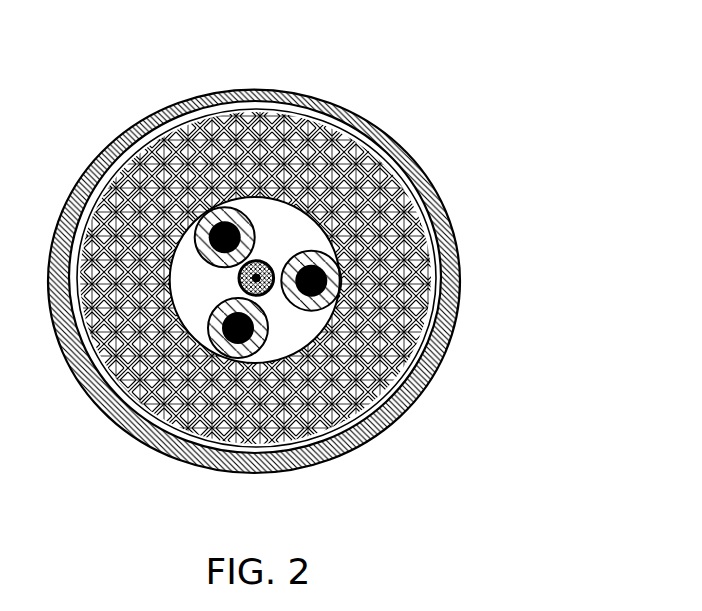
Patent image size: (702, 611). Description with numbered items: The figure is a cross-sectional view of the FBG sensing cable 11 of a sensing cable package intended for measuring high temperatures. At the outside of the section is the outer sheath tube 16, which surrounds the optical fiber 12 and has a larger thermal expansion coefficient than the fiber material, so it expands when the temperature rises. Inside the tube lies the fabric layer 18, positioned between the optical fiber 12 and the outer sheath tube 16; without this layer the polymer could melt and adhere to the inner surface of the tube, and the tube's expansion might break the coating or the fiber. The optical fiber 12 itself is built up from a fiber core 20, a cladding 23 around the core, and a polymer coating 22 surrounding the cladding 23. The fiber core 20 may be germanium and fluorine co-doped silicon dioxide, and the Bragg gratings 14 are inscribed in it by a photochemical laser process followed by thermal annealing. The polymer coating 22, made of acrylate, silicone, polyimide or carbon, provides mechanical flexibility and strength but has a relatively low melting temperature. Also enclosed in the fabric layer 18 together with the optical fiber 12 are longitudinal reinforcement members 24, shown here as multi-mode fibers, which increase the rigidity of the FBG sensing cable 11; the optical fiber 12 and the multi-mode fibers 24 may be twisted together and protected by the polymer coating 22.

The FBG sensing cable 11 is at (518, 60).
The optical fiber 12 is at (278, 248).
The Bragg gratings 14 is at (256, 254).
The outer sheath tube 16 is at (285, 85).
The fabric layer 18 is at (338, 123).
The fiber core 20 is at (232, 279).
The polymer coating 22 is at (231, 268).
The cladding 23 is at (262, 289).
The longitudinal reinforcement member 24 is at (163, 195).